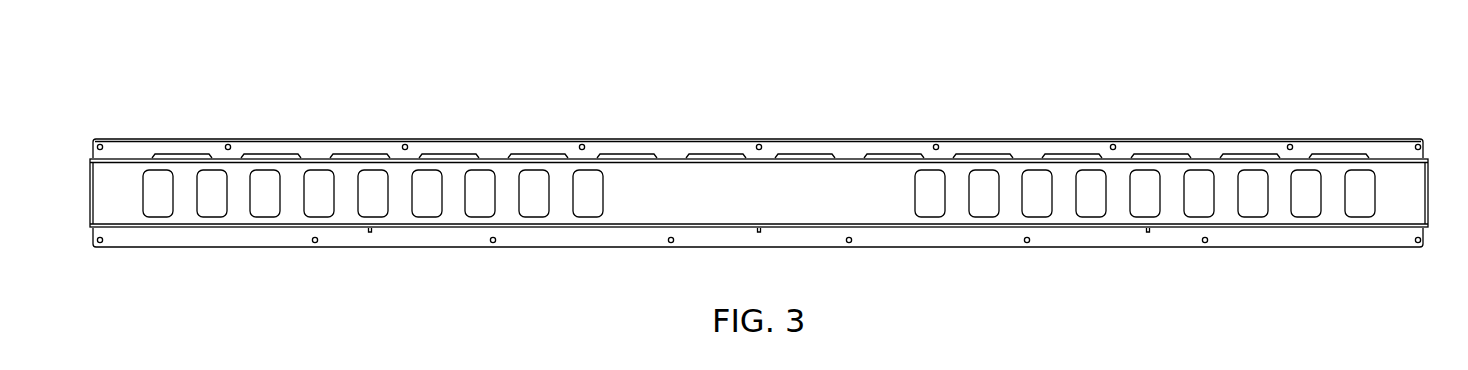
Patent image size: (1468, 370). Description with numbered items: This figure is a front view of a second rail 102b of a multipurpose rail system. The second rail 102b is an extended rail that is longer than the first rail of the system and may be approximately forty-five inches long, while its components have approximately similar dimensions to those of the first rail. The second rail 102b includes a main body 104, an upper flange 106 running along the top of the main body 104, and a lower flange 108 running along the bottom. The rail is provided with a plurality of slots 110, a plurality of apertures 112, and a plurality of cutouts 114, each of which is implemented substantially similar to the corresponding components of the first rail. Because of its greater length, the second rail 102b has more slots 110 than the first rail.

The second rail 102b is at (1365, 94).
The main body 104 is at (780, 205).
The upper flange 106 is at (831, 139).
The lower flange 108 is at (983, 248).
The slots 110 is at (181, 157).
The apertures 112 is at (102, 145).
The cutouts 114 is at (158, 205).